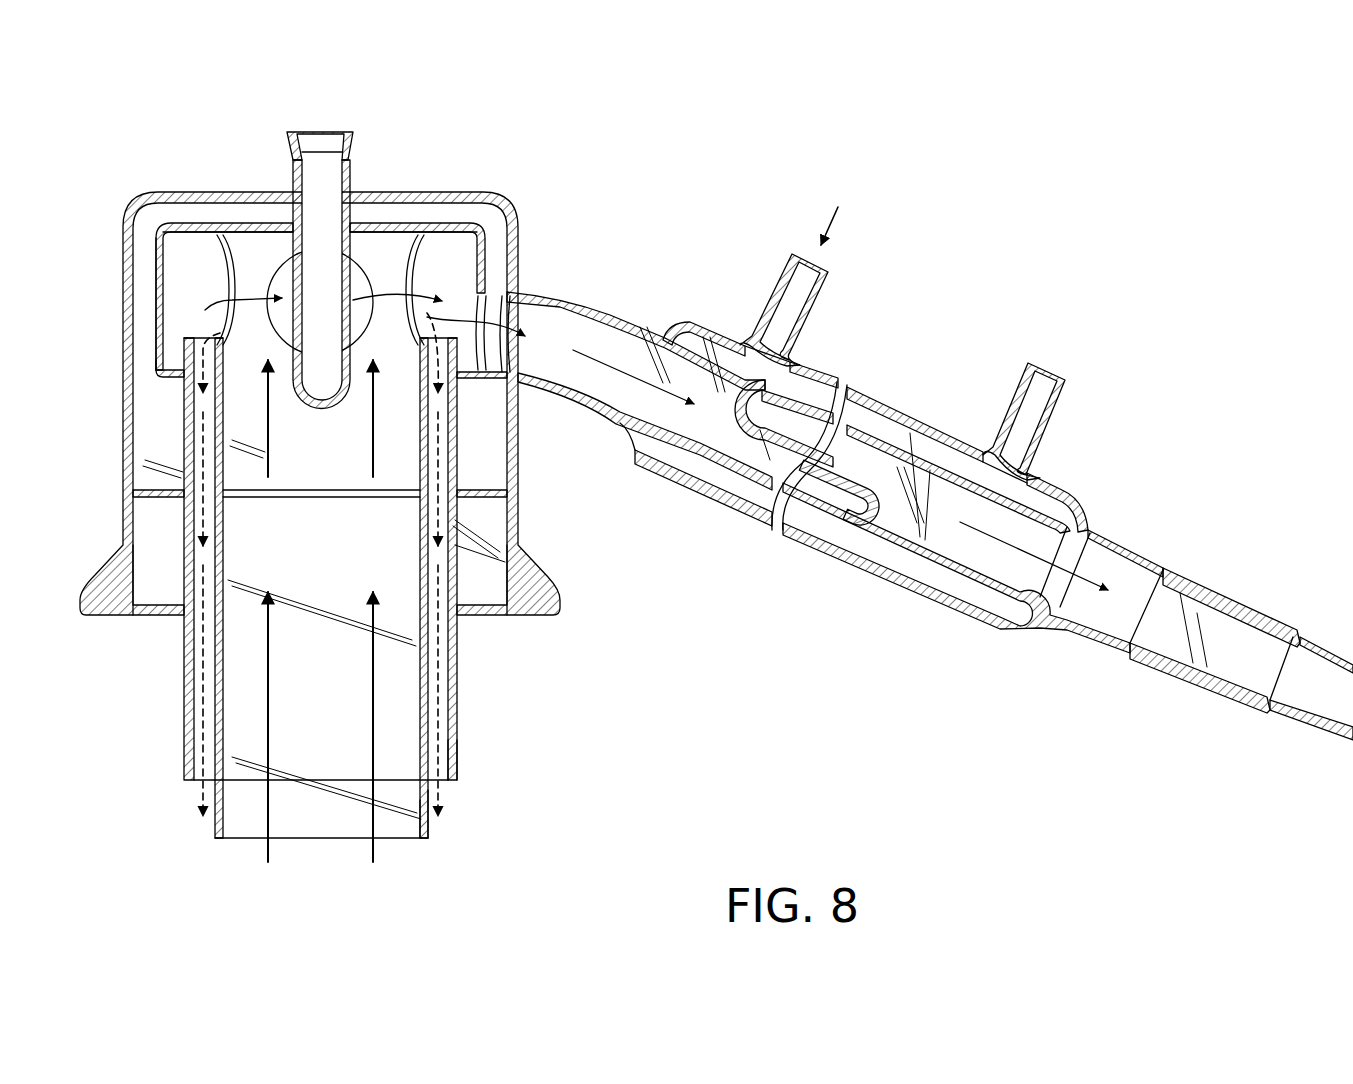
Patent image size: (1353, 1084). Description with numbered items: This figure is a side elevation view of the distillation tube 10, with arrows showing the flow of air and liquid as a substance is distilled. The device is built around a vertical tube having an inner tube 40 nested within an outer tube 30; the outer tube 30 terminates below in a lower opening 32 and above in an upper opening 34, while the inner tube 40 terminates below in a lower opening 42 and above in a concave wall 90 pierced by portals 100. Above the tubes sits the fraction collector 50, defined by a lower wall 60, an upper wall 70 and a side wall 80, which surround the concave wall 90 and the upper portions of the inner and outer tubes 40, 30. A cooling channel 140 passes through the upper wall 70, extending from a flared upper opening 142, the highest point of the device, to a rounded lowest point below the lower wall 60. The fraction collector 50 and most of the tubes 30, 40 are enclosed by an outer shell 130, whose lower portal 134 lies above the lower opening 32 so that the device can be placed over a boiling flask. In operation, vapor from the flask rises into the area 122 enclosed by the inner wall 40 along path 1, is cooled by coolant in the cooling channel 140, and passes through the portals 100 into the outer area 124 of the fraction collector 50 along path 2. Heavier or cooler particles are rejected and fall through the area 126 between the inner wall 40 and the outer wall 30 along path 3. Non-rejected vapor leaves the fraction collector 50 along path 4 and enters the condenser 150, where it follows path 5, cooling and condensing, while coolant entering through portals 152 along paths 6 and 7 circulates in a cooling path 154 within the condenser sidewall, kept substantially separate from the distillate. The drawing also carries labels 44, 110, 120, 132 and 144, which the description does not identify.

The path 1 is at (268, 810).
The path 2 is at (261, 295).
The path 3 is at (210, 770).
The path 4 is at (517, 338).
The path 5 is at (613, 370).
The path 6 is at (840, 205).
The path 7 is at (1053, 357).
The distillation tube 10 is at (357, 342).
The outer tube 30 is at (462, 688).
The lower opening 32 is at (410, 795).
The upper opening 34 is at (160, 237).
The inner tube 40 is at (430, 828).
The lower opening 42 is at (345, 840).
The inner lumen 44 is at (395, 700).
The fraction collector 50 is at (483, 270).
The lower wall 60 is at (180, 377).
The upper wall 70 is at (377, 223).
The side wall 80 is at (511, 268).
The concave wall 90 is at (233, 303).
The portal 100 is at (220, 338).
The inlet opening 110 is at (309, 863).
The outer tube 120 is at (405, 597).
The area 122 is at (440, 815).
The outer area 124 is at (183, 318).
The area 126 is at (440, 688).
The outer shell 130 is at (517, 470).
The outlet tube 132 is at (523, 318).
The lower portal 134 is at (158, 615).
The cooling channel 140 is at (372, 234).
The upper opening 142 is at (317, 130).
The sampling tube lip 144 is at (325, 217).
The condenser 150 is at (840, 370).
The portal 152 is at (820, 290).
The cooling path 154 is at (890, 427).